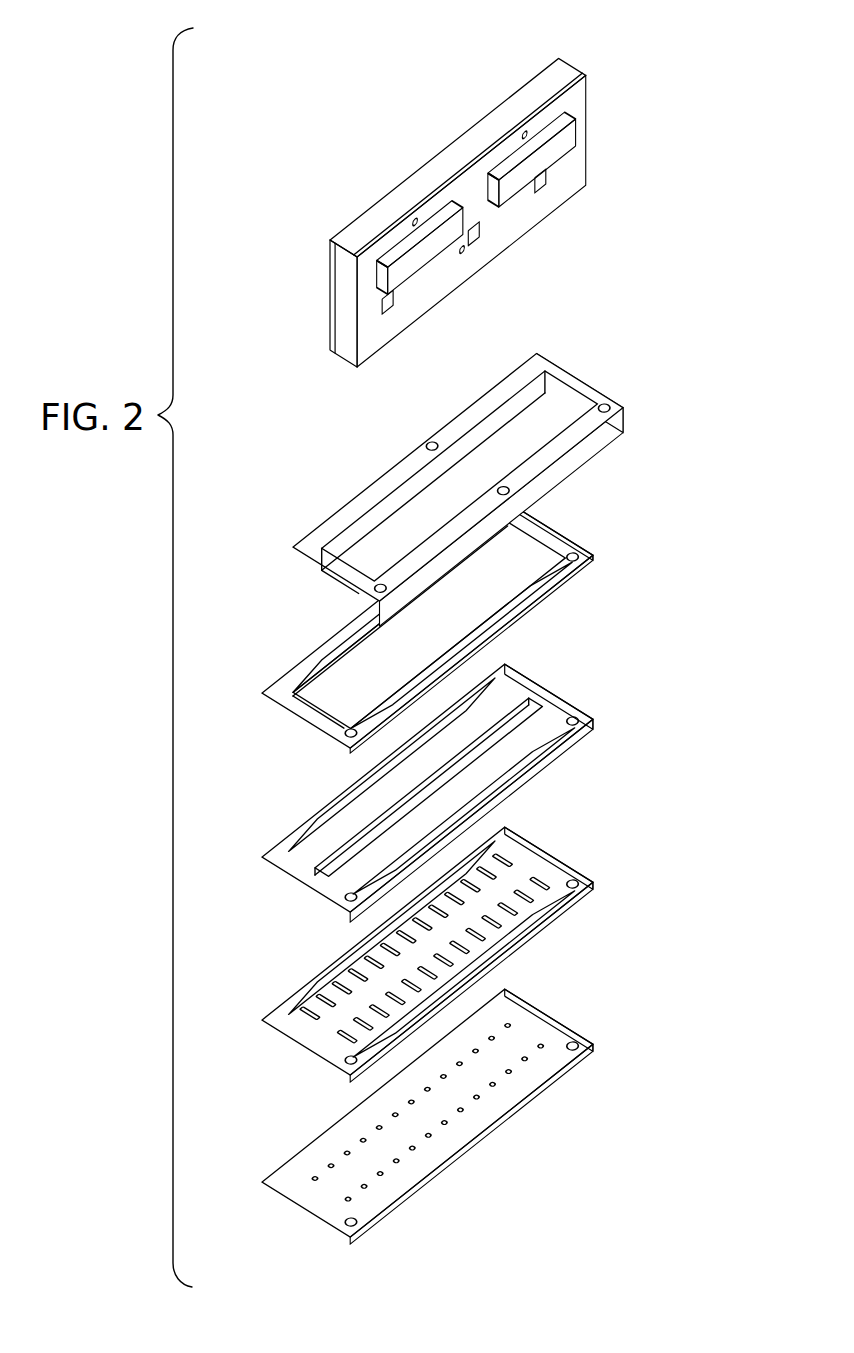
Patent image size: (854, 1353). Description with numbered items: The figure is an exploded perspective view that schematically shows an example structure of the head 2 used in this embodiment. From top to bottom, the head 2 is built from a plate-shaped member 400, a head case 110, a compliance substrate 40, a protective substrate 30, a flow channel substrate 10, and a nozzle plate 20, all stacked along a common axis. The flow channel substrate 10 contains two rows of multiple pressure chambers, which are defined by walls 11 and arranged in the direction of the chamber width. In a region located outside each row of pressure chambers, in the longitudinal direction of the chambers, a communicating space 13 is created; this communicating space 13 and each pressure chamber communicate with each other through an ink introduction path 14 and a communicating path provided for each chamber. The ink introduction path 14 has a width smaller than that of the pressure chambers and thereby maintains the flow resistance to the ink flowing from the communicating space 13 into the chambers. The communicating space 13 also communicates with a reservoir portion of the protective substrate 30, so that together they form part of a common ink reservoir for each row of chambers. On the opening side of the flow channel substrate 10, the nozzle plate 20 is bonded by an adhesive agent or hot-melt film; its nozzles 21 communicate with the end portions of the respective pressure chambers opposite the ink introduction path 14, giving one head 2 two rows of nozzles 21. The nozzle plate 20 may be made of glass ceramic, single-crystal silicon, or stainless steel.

The head 2 is at (659, 296).
The plate-shaped member 400 is at (557, 66).
The head case 110 is at (612, 427).
The compliance substrate 40 is at (588, 553).
The protective substrate 30 is at (588, 728).
The flow channel substrate 10 is at (547, 847).
The communicating space 13 is at (552, 917).
The ink introduction path 14 is at (523, 943).
The walls 11 is at (498, 967).
The nozzle plate 20 is at (392, 1190).
The nozzle 21 is at (446, 1122).